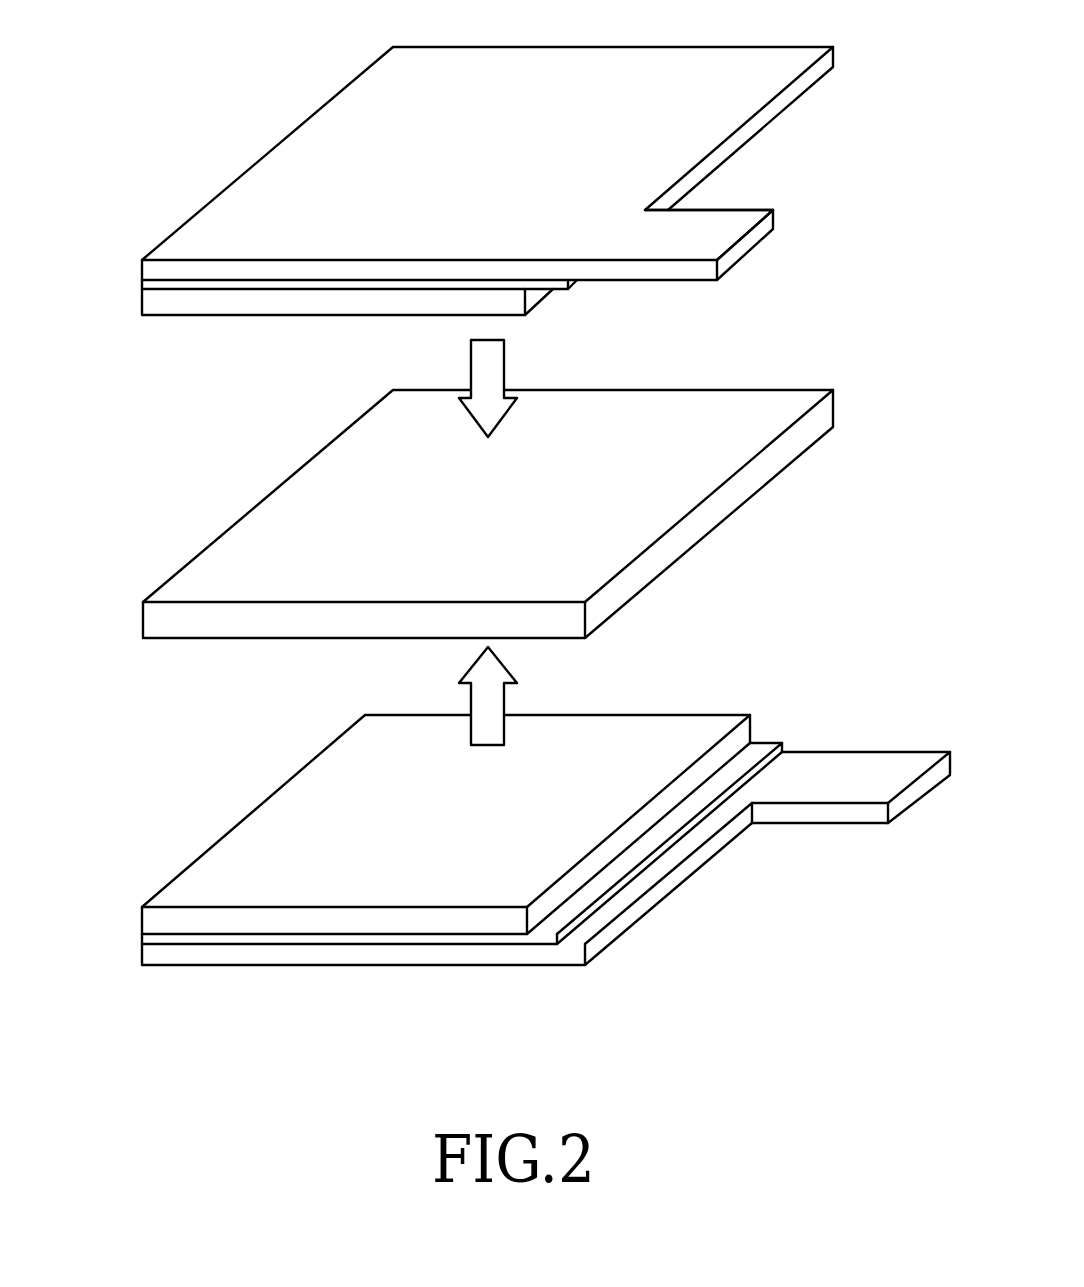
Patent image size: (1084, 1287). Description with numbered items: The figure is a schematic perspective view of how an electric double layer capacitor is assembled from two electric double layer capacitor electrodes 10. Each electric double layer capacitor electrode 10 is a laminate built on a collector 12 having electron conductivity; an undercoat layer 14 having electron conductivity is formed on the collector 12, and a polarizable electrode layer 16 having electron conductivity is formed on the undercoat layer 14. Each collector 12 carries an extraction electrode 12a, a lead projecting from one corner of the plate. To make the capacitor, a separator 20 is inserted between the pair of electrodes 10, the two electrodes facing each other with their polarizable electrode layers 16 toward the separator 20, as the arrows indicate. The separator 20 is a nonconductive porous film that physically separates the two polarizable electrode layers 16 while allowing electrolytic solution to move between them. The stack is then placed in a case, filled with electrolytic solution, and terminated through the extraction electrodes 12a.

The electric double layer capacitor electrode 10 is at (497, 537).
The collector 12 is at (248, 192).
The extraction electrode 12a is at (737, 258).
The undercoat layer 14 is at (157, 283).
The polarizable electrode layer 16 is at (177, 303).
The separator 20 is at (653, 560).